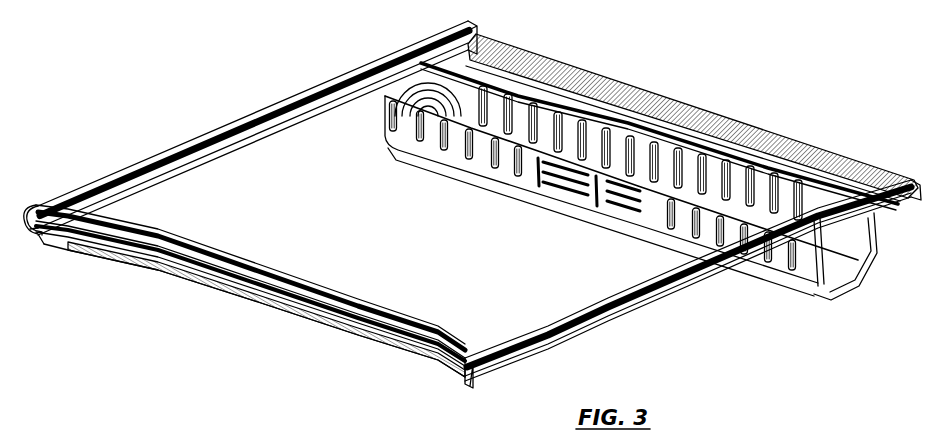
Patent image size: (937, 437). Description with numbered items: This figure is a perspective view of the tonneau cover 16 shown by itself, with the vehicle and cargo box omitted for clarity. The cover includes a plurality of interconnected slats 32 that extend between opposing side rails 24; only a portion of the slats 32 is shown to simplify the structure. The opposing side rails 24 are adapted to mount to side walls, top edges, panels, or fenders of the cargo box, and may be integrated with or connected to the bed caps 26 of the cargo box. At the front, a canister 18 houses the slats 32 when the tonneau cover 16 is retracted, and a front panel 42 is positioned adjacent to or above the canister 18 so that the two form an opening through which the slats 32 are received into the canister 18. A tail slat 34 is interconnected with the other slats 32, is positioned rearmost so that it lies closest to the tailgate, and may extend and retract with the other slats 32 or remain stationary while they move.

The tonneau cover 16 is at (658, 79).
The canister 18 is at (487, 152).
The side rails 24 is at (474, 204).
The bed caps 26 is at (243, 112).
The slats 32 is at (263, 275).
The tail slat 34 is at (200, 277).
The front panel 42 is at (755, 160).